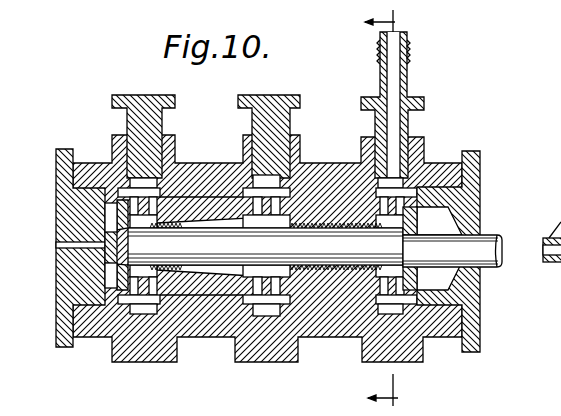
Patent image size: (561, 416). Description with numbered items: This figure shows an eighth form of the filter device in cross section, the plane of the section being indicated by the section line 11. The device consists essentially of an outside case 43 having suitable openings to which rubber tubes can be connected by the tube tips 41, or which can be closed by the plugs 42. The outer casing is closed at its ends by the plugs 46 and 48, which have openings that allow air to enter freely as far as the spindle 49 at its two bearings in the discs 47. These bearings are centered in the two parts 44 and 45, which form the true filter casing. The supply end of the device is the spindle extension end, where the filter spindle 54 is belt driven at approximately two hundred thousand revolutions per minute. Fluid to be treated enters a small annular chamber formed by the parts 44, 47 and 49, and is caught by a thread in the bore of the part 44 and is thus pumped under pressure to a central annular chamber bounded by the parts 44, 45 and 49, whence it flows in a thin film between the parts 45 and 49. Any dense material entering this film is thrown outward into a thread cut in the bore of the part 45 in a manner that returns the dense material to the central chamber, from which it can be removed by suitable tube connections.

The section line 11 is at (393, 209).
The tube tips 41 is at (405, 72).
The plugs 42 is at (238, 97).
The outside case 43 is at (313, 165).
The filter casing part 44 is at (305, 192).
The filter casing part 45 is at (204, 198).
The end plug 46 is at (56, 177).
The bearing discs 47 is at (417, 222).
The end plug 48 is at (480, 188).
The spindle 49 is at (265, 246).
The filter spindle 54 is at (490, 258).